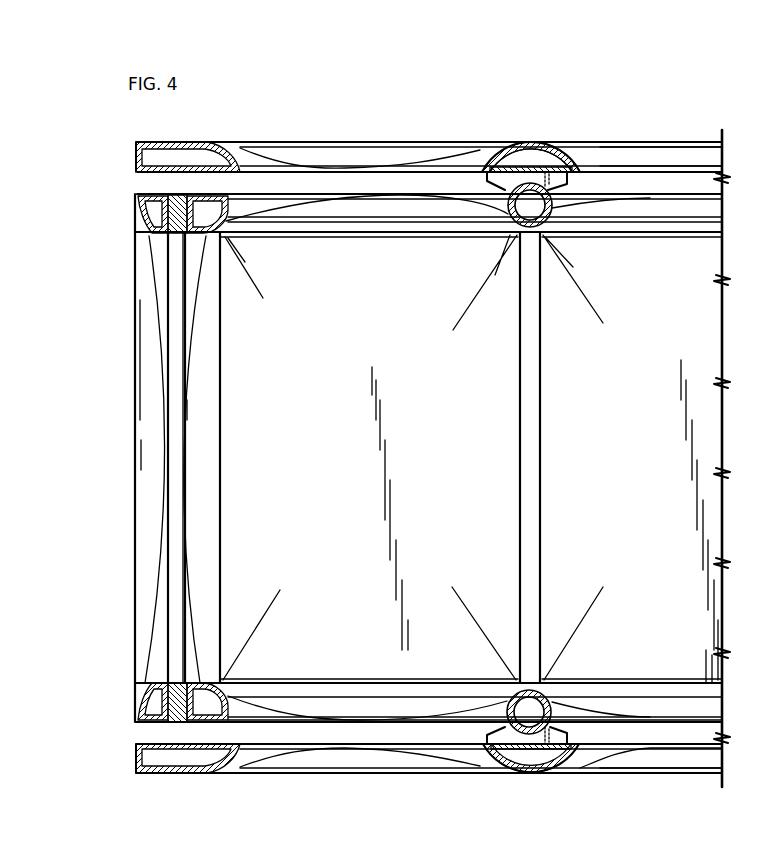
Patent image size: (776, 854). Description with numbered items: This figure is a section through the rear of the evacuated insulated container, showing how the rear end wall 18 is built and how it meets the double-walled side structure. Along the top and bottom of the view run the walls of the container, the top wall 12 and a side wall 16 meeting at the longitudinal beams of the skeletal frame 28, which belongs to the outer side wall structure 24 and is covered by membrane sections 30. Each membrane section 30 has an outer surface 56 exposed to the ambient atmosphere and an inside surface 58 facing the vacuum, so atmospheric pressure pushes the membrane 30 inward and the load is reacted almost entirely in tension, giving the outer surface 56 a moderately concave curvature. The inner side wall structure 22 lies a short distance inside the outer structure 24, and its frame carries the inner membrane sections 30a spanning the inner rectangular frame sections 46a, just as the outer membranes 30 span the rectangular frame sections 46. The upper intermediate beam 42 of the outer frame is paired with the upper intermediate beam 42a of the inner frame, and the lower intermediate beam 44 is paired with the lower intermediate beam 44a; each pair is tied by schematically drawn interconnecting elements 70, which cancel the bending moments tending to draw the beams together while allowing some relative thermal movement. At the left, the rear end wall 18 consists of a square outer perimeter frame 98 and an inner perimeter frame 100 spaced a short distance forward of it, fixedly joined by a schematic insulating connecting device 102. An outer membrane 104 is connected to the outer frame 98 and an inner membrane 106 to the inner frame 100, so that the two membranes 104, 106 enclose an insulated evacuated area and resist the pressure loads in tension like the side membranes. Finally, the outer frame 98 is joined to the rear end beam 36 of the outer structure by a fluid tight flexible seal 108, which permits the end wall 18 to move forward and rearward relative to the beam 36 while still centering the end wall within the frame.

The top wall 12 is at (723, 350).
The side walls 16 is at (320, 142).
The end wall 18 is at (135, 350).
The inner side wall structure 22 is at (675, 234).
The outer side wall structure 24 is at (697, 135).
The skeletal frame 28 is at (571, 148).
The membrane sections 30 is at (282, 162).
The inner membrane sections 30a is at (287, 205).
The rear end beams 36 is at (172, 143).
The upper intermediate beams 42 is at (503, 156).
The inner upper intermediate beams 42a is at (522, 215).
The lower intermediate beams 44 is at (522, 767).
The inner lower intermediate beams 44a is at (520, 696).
The rectangular frame sections 46 is at (583, 162).
The inner rectangular frame sections 46a is at (603, 200).
The outer surface 56 is at (697, 163).
The inside surface 58 is at (626, 161).
The interconnecting elements 70 is at (487, 180).
The outer perimeter frame 98 is at (141, 207).
The inner perimeter frame 100 is at (224, 218).
The insulating connecting device 102 is at (180, 238).
The outer membrane 104 is at (156, 303).
The inner membrane 106 is at (195, 316).
The fluid tight flexible seal 108 is at (166, 188).